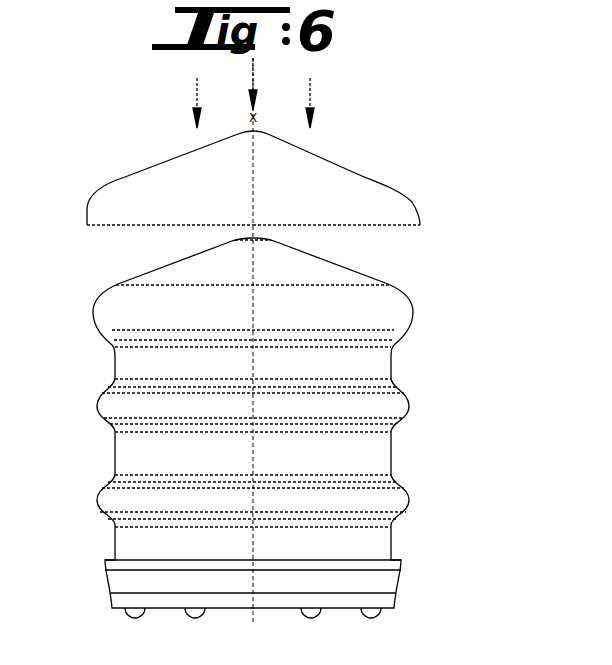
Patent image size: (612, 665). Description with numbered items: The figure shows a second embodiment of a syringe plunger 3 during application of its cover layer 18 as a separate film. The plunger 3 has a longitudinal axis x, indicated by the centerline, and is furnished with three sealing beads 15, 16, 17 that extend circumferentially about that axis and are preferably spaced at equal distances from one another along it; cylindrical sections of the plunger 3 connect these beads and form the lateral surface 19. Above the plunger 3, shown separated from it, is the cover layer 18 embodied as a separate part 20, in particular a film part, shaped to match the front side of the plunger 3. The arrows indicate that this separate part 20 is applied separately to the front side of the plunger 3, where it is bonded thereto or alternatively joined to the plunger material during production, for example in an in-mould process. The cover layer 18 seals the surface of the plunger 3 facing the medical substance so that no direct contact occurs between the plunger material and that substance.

The plunger 3 is at (253, 428).
The sealing bead 15 is at (390, 313).
The sealing bead 16 is at (390, 404).
The sealing bead 17 is at (398, 498).
The cover layer 18 is at (133, 190).
The lateral surface 19 is at (128, 367).
The separate part 20 is at (355, 177).